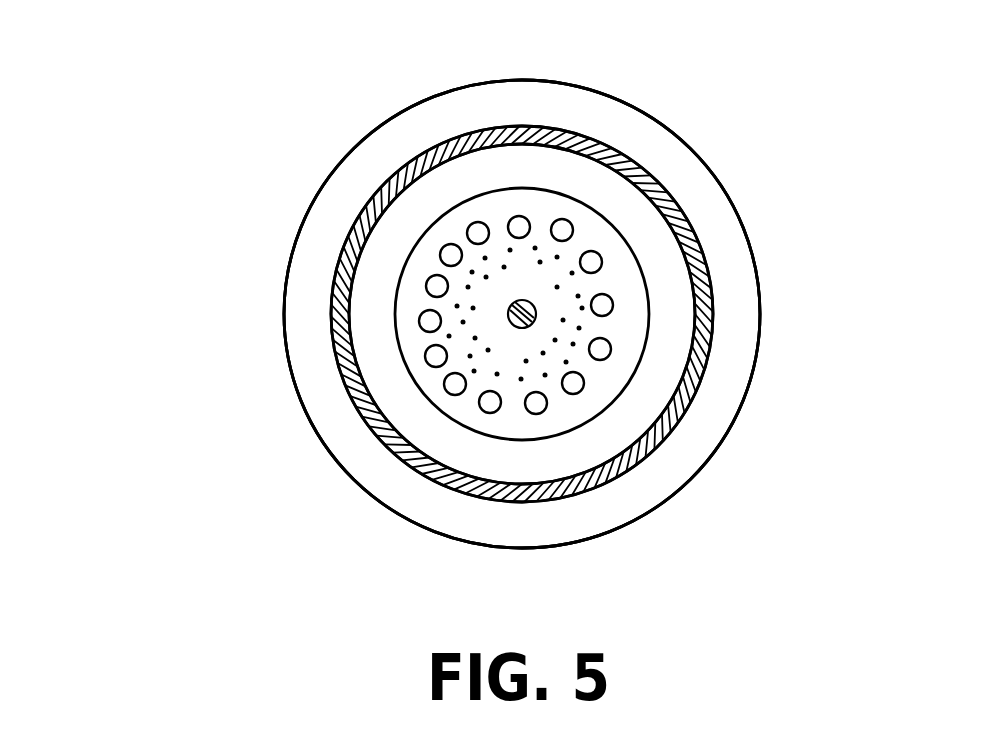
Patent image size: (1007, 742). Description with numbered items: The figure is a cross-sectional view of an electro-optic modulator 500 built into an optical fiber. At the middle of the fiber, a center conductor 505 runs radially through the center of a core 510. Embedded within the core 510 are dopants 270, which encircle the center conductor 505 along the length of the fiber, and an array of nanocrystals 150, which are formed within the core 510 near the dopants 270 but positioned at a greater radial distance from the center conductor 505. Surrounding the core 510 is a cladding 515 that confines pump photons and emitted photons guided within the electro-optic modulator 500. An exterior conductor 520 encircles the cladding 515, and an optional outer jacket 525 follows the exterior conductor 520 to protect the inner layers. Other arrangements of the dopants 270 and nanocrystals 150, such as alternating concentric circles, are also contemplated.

The electro-optic modulator 500 is at (103, 108).
The center conductor 505 is at (536, 313).
The core 510 is at (536, 414).
The cladding 515 is at (393, 410).
The exterior conductor 520 is at (333, 272).
The jacket 525 is at (632, 118).
The dopants 270 is at (572, 345).
The nanocrystals 150 is at (577, 391).